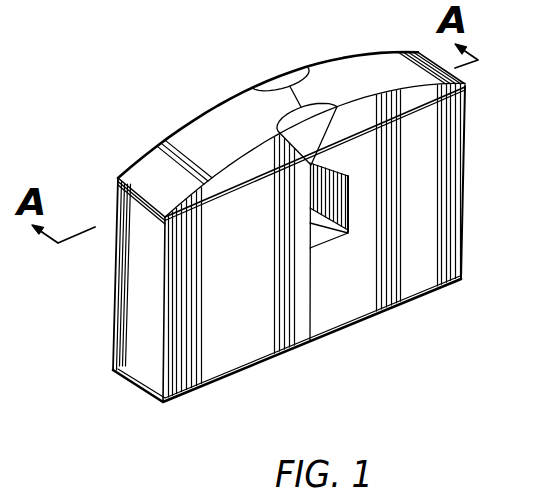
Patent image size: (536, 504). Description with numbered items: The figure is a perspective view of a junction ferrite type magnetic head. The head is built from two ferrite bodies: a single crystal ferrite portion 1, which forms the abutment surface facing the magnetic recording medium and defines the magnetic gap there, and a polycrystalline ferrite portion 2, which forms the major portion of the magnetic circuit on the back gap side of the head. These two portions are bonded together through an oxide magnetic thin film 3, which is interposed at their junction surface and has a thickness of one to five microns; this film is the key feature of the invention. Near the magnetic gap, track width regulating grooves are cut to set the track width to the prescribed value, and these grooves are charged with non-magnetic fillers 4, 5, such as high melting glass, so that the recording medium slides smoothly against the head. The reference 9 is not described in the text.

The single crystal ferrite portion 1 is at (175, 147).
The polycrystalline ferrite portion 2 is at (130, 309).
The oxide magnetic thin film 3 is at (130, 200).
The non-magnetic filler 4 is at (318, 105).
The non-magnetic filler 5 is at (279, 80).
The connecting groove 9 is at (293, 86).